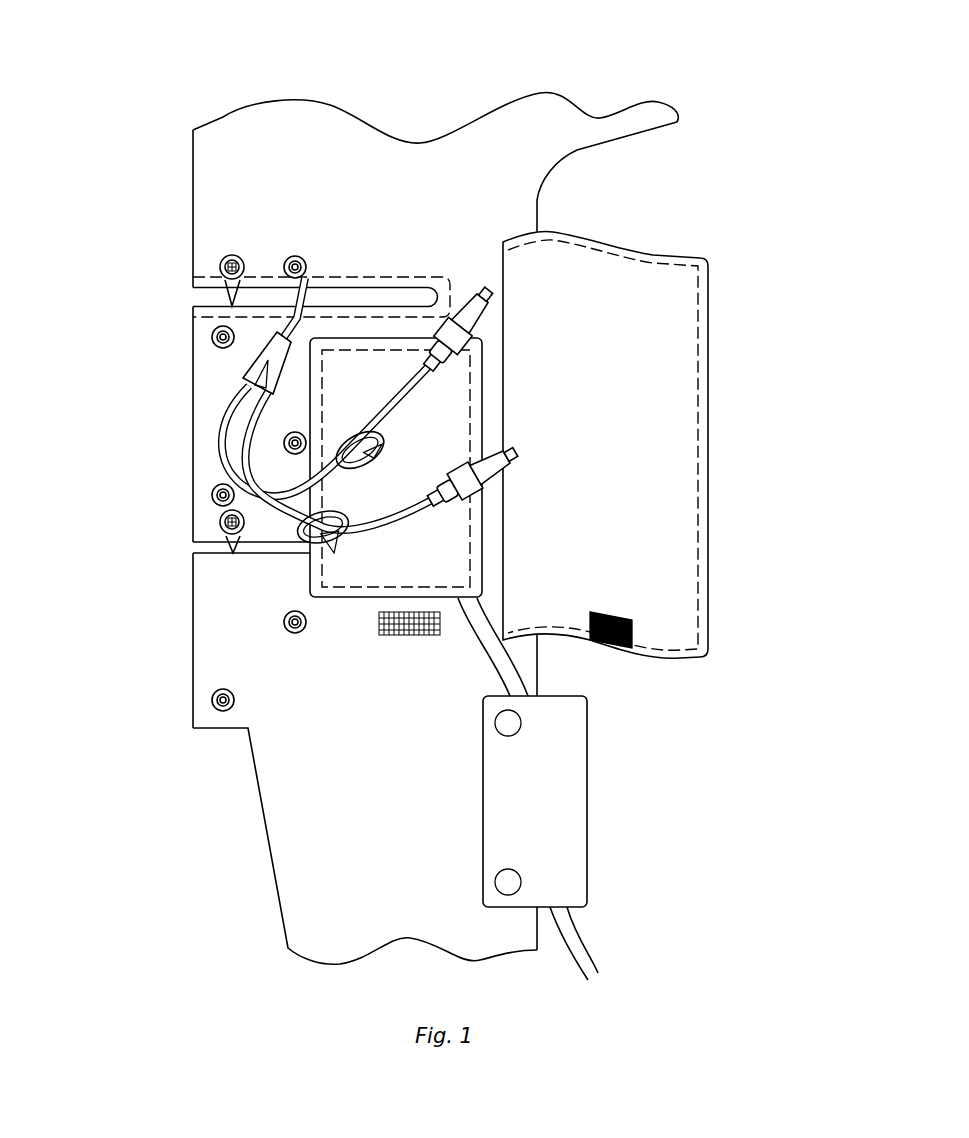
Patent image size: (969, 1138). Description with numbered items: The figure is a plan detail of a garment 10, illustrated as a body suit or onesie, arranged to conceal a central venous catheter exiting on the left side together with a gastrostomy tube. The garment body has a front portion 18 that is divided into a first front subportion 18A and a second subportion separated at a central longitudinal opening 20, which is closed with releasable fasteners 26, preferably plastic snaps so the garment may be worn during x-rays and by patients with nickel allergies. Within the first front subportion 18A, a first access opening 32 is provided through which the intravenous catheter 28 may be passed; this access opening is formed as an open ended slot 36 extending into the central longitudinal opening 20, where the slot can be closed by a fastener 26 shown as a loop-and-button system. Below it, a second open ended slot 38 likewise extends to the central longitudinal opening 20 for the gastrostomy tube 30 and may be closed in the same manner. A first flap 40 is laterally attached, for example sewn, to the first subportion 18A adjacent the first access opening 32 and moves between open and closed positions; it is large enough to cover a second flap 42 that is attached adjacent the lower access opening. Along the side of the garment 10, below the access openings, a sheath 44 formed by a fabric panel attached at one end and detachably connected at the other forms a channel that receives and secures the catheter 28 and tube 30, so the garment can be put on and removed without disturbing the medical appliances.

The garment 10 is at (697, 192).
The front portion 18 is at (362, 128).
The first front subportion 18A is at (450, 167).
The central longitudinal opening 20 is at (192, 413).
The releasable fasteners 26 is at (220, 262).
The intravenous catheter 28 is at (392, 407).
The gastrostomy tube 30 is at (580, 940).
The first access opening 32 is at (348, 297).
The open ended slot 36 is at (197, 297).
The second open ended slot 38 is at (197, 548).
The first flap 40 is at (712, 378).
The second flap 42 is at (342, 600).
The sheath 44 is at (587, 780).